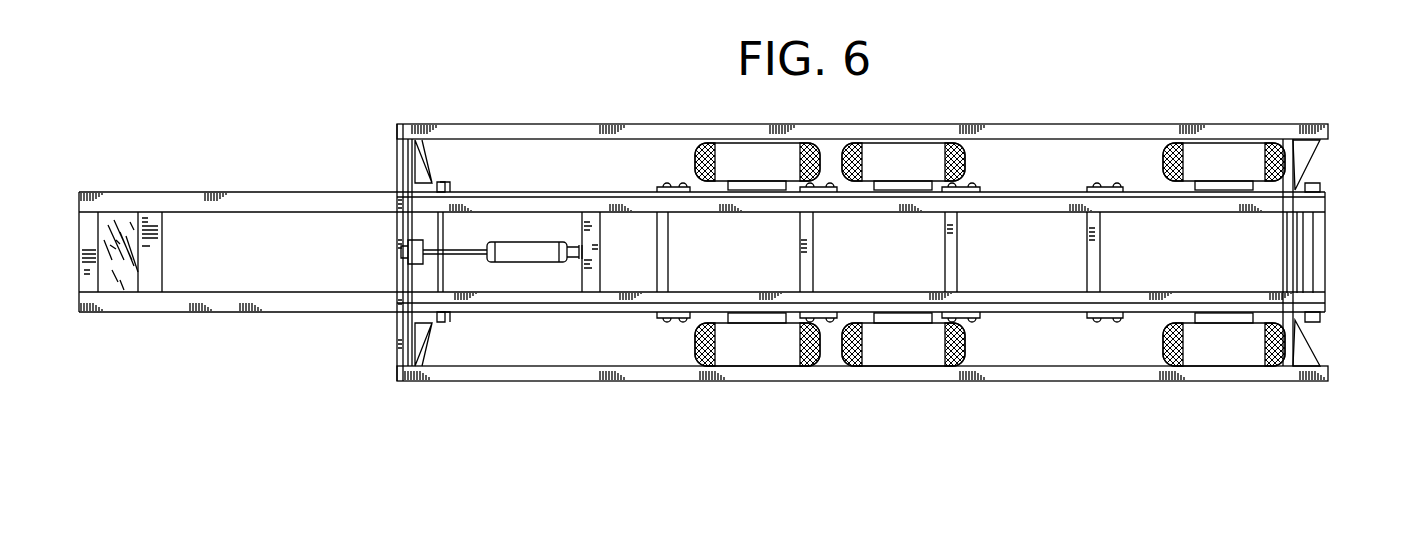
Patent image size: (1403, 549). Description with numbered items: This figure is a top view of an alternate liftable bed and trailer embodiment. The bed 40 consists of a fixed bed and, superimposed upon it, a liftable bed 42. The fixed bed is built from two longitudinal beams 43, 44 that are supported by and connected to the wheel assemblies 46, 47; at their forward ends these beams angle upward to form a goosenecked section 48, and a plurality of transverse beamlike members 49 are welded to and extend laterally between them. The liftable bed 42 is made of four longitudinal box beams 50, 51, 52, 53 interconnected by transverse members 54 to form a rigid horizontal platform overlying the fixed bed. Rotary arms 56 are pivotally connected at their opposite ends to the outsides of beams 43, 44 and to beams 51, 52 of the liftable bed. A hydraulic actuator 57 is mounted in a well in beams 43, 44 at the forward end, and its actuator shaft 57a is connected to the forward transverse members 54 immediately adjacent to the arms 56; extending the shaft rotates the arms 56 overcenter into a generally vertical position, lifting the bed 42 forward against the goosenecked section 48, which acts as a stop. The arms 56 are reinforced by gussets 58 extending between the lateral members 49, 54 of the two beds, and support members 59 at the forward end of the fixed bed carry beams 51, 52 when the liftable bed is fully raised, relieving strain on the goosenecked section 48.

The bed 40 is at (862, 256).
The liftable bed 42 is at (603, 381).
The longitudinal beam 43 is at (530, 300).
The longitudinal beam 44 is at (563, 195).
The wheel assembly 46 is at (915, 369).
The wheel assembly 47 is at (762, 369).
The goosenecked section 48 is at (317, 192).
The transverse beamlike member 49 is at (861, 243).
The longitudinal box beam 50 is at (1012, 374).
The longitudinal box beam 51 is at (1010, 300).
The longitudinal box beam 52 is at (1032, 206).
The longitudinal box beam 53 is at (1001, 133).
The transverse member 54 is at (397, 152).
The rotary arm 56 is at (427, 184).
The hydraulic actuator 57 is at (508, 252).
The actuator shaft 57a is at (455, 250).
The gusset 58 is at (428, 167).
The support member 59 is at (462, 195).